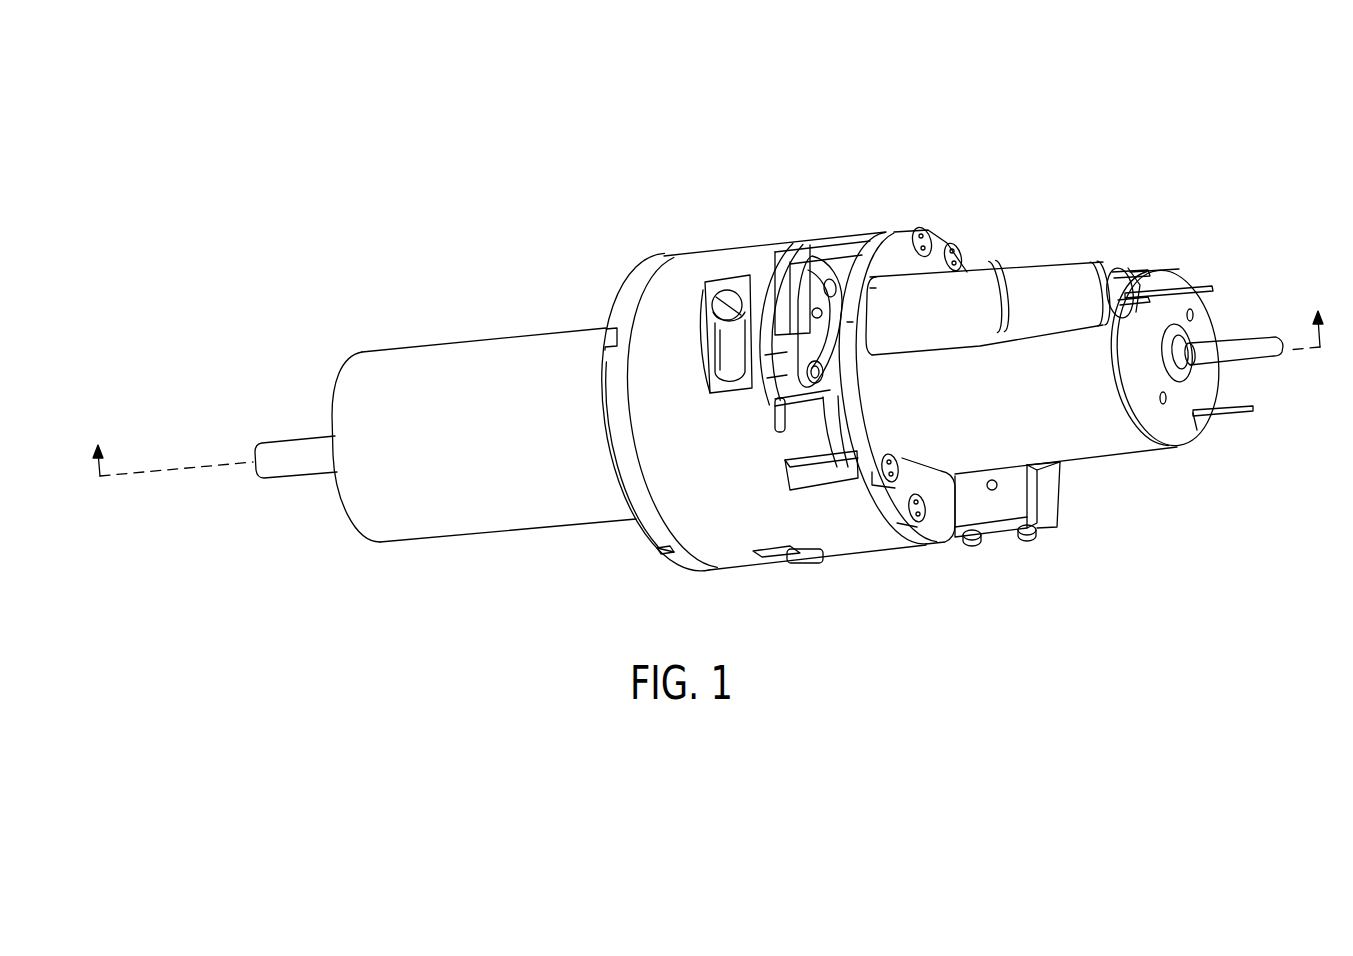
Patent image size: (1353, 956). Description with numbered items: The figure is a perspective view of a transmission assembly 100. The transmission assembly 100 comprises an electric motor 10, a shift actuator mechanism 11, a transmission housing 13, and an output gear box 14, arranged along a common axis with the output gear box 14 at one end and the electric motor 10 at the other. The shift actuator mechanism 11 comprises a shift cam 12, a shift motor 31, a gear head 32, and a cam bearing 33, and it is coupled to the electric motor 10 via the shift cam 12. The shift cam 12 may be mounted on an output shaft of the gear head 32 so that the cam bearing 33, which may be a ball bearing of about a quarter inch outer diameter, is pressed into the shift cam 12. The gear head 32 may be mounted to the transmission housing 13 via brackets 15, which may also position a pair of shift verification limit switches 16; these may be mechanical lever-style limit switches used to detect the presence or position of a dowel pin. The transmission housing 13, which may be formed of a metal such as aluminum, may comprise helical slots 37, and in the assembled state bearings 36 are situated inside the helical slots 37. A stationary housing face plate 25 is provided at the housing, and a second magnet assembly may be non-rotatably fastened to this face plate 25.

The transmission assembly 100 is at (435, 102).
The electric motor 10 is at (1120, 447).
The shift actuator mechanism 11 is at (1026, 262).
The shift cam 12 is at (798, 278).
The transmission housing 13 is at (686, 262).
The output gear box 14 is at (459, 352).
The brackets 15 is at (872, 545).
The shift verification limit switches 16 is at (1047, 502).
The housing face plate 25 is at (634, 272).
The shift motor 31 is at (1065, 290).
The gear head 32 is at (927, 298).
The cam bearing 33 is at (803, 335).
The bearings 36 is at (717, 298).
The helical slots 37 is at (735, 368).